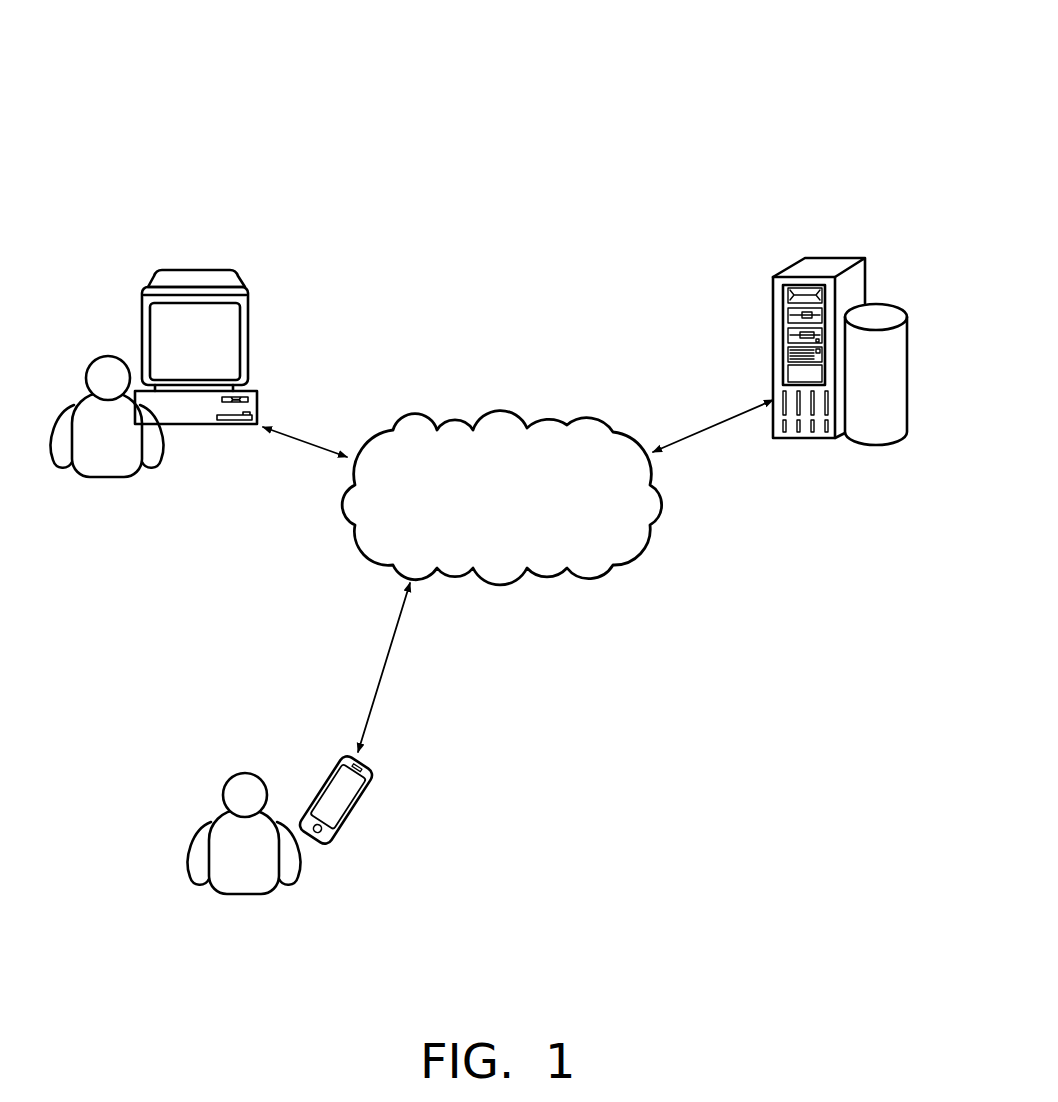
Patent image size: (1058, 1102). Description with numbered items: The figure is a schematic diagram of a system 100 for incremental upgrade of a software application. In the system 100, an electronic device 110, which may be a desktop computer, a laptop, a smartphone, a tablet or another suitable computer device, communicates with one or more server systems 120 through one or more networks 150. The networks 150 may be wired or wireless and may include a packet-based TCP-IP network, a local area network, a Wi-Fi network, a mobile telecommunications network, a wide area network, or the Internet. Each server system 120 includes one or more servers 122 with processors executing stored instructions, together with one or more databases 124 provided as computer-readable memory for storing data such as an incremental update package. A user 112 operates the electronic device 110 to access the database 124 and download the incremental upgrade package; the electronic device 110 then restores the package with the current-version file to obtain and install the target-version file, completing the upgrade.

The system 100 is at (668, 133).
The electronic device 110 is at (195, 275).
The user 112 is at (107, 355).
The server system 120 is at (859, 378).
The server 122 is at (825, 263).
The database 124 is at (880, 313).
The network 150 is at (502, 410).